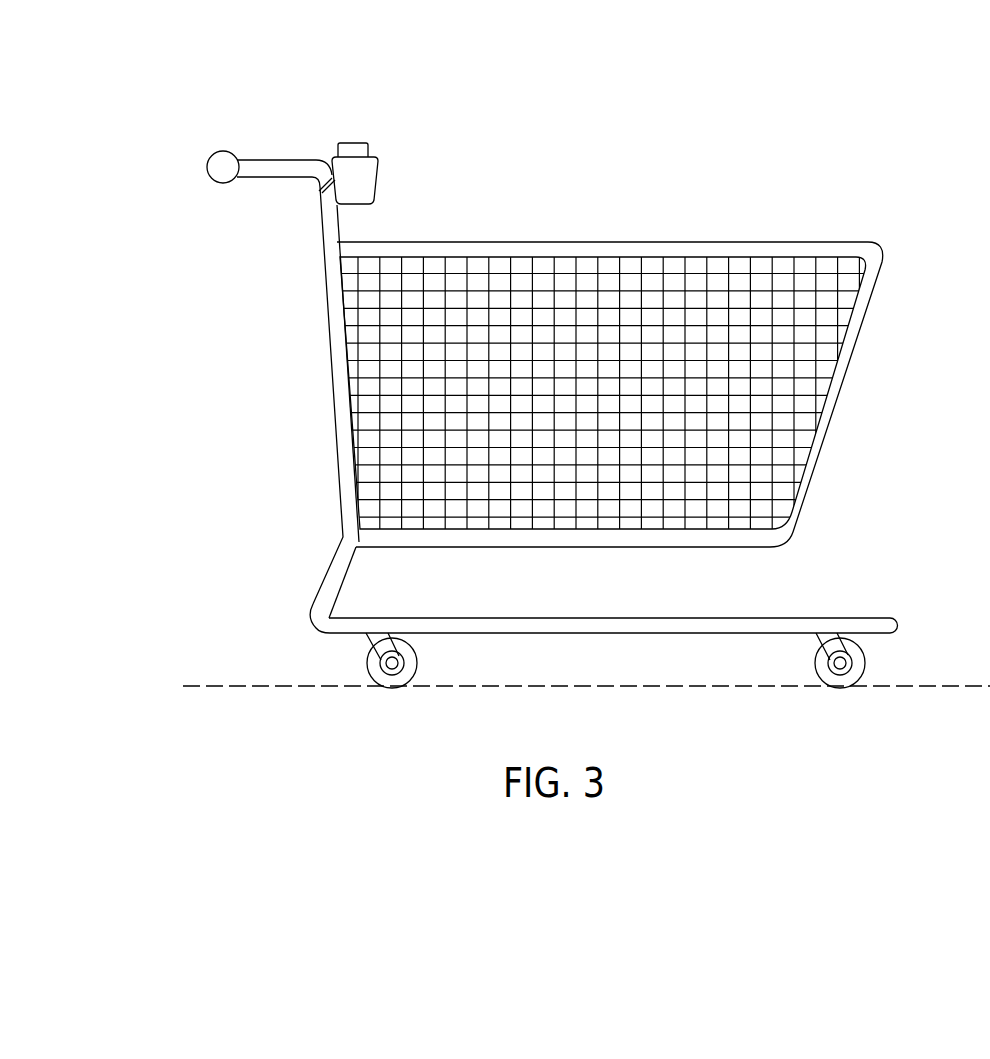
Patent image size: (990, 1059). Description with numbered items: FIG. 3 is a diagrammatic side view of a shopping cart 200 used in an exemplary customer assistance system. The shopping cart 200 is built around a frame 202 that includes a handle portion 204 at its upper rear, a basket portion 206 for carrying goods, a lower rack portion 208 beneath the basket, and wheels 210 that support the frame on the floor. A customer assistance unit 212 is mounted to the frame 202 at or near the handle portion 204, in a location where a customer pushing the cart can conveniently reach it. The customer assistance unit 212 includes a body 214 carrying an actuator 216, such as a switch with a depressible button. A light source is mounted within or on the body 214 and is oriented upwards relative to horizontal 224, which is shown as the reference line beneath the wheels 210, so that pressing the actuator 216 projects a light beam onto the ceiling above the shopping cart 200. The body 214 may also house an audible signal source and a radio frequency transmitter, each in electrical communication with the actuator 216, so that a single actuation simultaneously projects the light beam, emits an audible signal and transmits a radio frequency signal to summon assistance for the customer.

The shopping cart 200 is at (729, 66).
The frame 202 is at (320, 226).
The handle portion 204 is at (197, 128).
The basket portion 206 is at (818, 242).
The lower rack portion 208 is at (817, 618).
The wheels 210 is at (418, 668).
The customer assistance unit 212 is at (381, 115).
The body 214 is at (378, 180).
The actuator 216 is at (350, 143).
The horizontal 224 is at (233, 684).